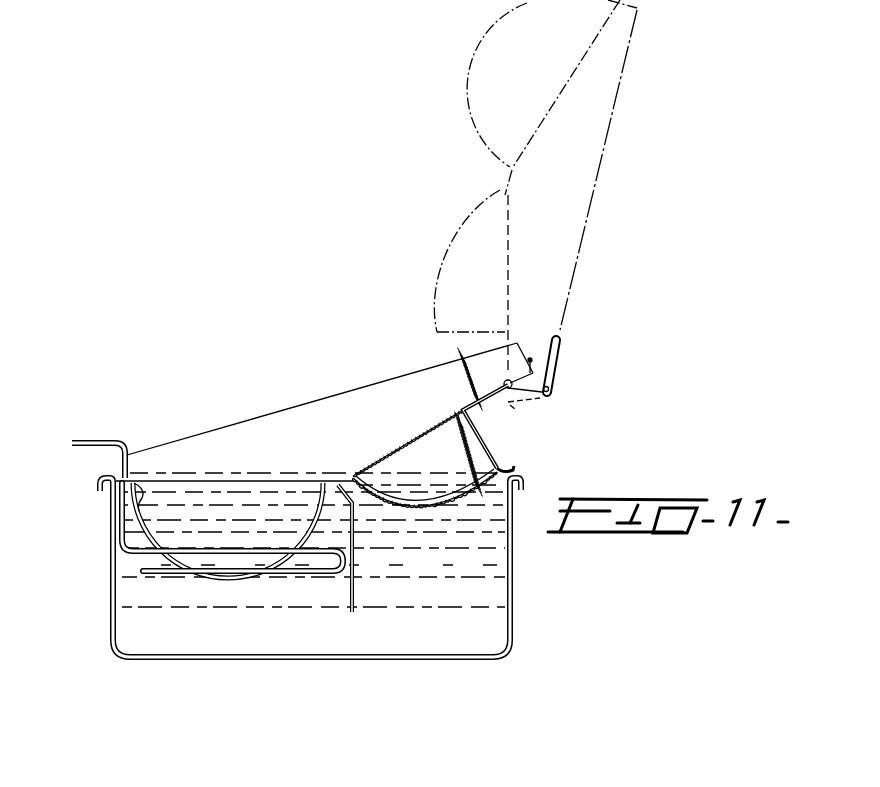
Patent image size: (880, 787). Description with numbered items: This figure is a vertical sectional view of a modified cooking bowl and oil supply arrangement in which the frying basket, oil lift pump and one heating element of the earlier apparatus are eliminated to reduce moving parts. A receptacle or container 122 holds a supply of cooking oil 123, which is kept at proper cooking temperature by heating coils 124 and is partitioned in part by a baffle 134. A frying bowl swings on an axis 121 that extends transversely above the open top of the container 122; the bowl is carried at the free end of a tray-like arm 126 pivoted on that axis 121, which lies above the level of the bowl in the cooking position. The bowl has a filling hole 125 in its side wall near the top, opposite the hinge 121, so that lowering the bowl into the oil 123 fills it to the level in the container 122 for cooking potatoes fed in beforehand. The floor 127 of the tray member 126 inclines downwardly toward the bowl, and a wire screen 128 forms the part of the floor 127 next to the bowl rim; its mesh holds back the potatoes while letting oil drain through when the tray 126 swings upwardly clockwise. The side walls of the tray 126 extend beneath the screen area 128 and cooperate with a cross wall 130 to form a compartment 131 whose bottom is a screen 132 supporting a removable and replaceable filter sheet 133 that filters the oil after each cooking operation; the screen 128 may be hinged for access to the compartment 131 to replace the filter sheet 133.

The axis 121 is at (504, 382).
The receptacle or container 122 is at (112, 575).
The cooking oil 123 is at (243, 628).
The heating coils 124 is at (162, 571).
The filling hole 125 is at (124, 500).
The tray-like arm 126 is at (340, 407).
The floor 127 is at (466, 394).
The wire screen 128 is at (410, 437).
The cross wall 130 is at (487, 441).
The compartment 131 is at (503, 464).
The screen 132 is at (458, 503).
The filter sheet 133 is at (413, 500).
The baffle 134 is at (357, 586).